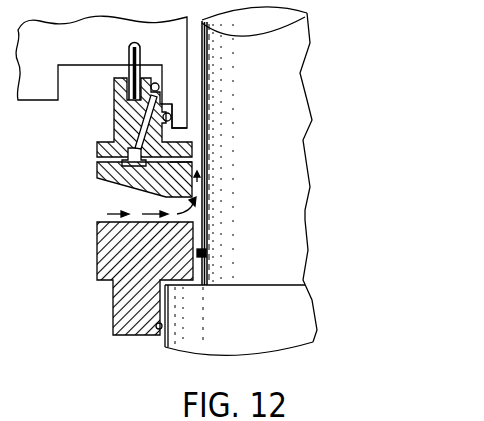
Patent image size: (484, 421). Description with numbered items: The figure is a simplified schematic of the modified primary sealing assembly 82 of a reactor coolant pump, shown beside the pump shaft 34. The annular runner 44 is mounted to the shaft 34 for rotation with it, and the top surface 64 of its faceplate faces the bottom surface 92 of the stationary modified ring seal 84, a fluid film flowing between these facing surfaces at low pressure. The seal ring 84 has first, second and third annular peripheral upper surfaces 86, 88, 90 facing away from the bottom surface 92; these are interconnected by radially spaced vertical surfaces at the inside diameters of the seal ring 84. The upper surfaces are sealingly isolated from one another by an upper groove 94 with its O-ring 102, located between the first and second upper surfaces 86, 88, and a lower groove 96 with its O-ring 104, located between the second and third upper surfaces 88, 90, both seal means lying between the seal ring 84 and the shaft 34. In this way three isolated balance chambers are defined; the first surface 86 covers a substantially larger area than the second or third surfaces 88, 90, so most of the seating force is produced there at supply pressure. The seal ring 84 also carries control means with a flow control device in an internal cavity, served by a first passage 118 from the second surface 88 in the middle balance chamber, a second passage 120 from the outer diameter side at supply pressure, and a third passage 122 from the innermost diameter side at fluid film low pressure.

The pump shaft 34 is at (270, 335).
The annular runner 44 is at (204, 252).
The top surface of the faceplate 64 is at (105, 218).
The modified primary sealing assembly 82 is at (226, 222).
The modified ring seal 84 is at (196, 182).
The first annular peripheral upper surface 86 is at (120, 78).
The second annular peripheral upper surface 88 is at (172, 106).
The third annular peripheral upper surface 90 is at (182, 141).
The bottom surface 92 is at (118, 182).
The upper groove 94 is at (276, 73).
The O-ring 102 is at (158, 86).
The lower groove 96 is at (280, 126).
The O-ring 104 is at (171, 117).
The first passage 118 is at (113, 128).
The second passage 120 is at (97, 159).
The third passage 122 is at (191, 164).